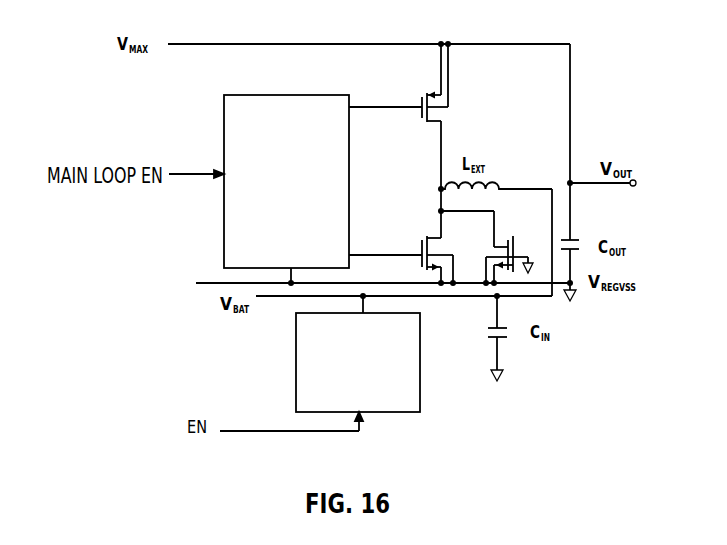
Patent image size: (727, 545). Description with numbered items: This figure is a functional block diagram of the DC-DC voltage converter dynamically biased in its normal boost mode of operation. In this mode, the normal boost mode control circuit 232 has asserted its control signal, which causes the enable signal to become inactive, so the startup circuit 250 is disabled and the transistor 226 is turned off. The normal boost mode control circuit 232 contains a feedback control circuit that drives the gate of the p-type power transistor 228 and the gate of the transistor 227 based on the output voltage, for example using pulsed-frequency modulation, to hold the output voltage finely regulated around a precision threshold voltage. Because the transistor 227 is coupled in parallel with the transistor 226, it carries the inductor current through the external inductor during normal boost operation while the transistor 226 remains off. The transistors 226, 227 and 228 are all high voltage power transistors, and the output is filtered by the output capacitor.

The normal boost mode control circuit 232 is at (302, 242).
The startup circuit 250 is at (374, 407).
The transistor 228 is at (421, 119).
The transistor 227 is at (421, 247).
The transistor 226 is at (512, 240).